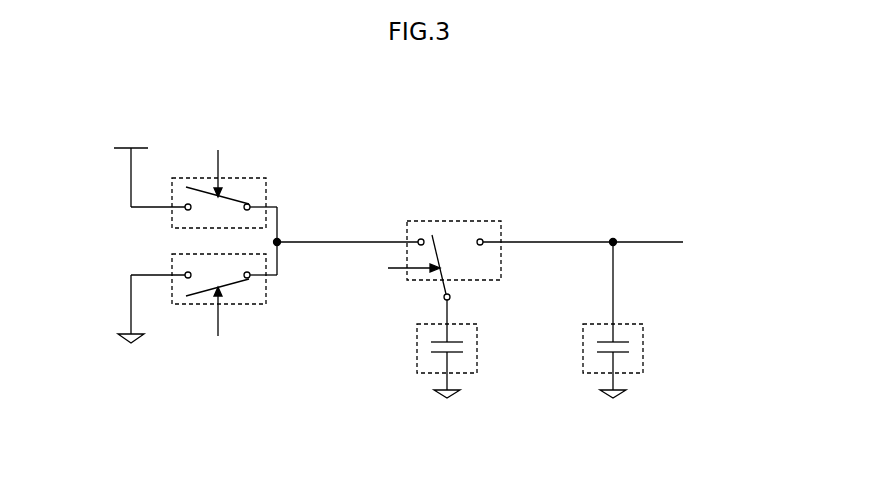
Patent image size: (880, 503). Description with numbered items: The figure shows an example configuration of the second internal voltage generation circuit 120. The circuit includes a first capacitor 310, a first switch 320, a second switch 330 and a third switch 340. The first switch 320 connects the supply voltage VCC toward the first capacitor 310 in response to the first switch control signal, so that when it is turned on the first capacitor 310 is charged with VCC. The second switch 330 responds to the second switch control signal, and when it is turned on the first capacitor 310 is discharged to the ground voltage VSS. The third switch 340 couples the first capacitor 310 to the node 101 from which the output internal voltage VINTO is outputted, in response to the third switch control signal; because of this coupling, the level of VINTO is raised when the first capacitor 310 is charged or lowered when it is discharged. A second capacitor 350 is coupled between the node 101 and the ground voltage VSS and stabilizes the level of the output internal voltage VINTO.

The second internal voltage generation circuit 120 is at (83, 104).
The first switch 320 is at (266, 190).
The second switch 330 is at (266, 296).
The third switch 340 is at (485, 221).
The first capacitor 310 is at (477, 348).
The second capacitor 350 is at (643, 348).
The node 101 is at (613, 242).